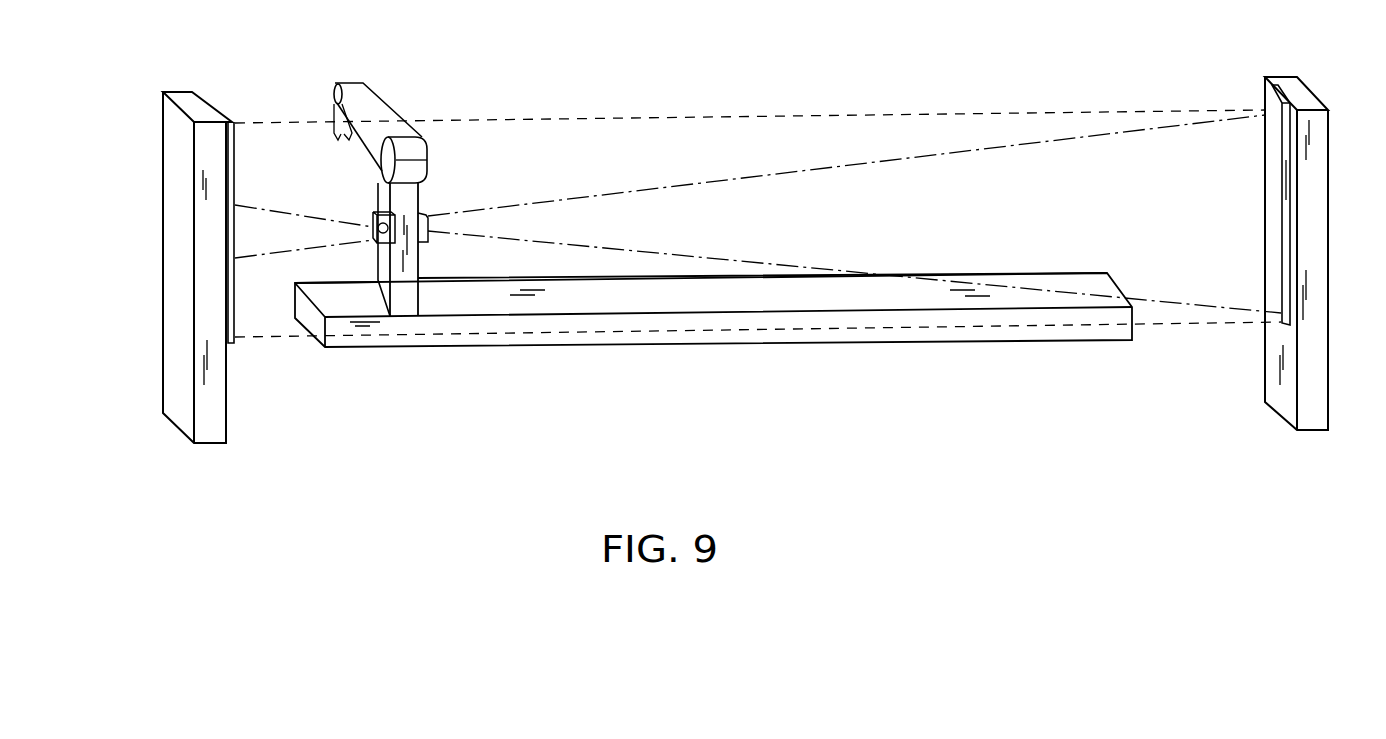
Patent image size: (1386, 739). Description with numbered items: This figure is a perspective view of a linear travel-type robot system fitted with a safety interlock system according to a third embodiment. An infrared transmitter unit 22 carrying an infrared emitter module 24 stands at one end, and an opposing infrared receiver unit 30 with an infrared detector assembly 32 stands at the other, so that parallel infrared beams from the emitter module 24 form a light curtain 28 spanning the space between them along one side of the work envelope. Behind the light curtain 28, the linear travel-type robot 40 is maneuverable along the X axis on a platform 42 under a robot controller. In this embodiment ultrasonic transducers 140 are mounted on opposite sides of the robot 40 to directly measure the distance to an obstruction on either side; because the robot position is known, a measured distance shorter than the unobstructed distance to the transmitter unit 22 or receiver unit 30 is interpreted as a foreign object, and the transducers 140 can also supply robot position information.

The infrared transmitter unit 22 is at (173, 272).
The infrared emitter module 24 is at (231, 122).
The light curtain 28 is at (837, 137).
The infrared receiver unit 30 is at (1315, 200).
The infrared detector assembly 32 is at (1272, 84).
The linear travel-type robot system 40 is at (378, 107).
The platform 42 is at (995, 280).
The ultrasonic transducers 140 is at (375, 237).